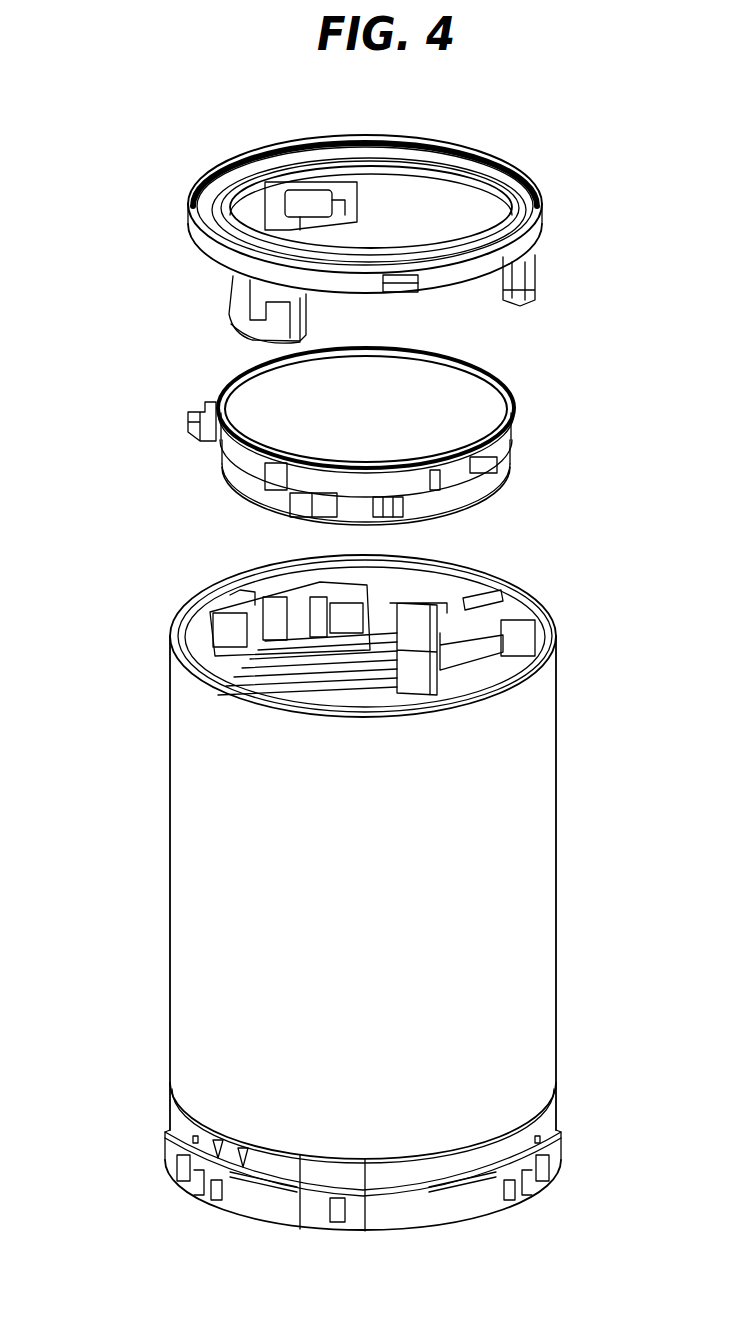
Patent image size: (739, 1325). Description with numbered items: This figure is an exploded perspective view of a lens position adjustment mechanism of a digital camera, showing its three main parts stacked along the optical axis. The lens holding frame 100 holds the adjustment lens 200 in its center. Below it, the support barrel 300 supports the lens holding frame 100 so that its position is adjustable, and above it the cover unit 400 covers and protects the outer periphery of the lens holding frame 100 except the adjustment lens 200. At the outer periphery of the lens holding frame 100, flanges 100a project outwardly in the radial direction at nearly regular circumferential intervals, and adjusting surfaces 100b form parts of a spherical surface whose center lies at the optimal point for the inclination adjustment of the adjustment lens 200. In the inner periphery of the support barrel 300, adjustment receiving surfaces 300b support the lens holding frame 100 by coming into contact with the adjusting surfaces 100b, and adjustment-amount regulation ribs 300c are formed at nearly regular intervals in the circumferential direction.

The cover unit 400 is at (525, 182).
The lens holding frame 100 is at (240, 383).
The adjustment lens 200 is at (460, 393).
The flange 100a is at (195, 430).
The adjusting surface 100b is at (257, 497).
The support barrel 300 is at (527, 808).
The adjustment receiving surface 300b is at (388, 640).
The adjustment-amount regulation rib 300c is at (483, 598).